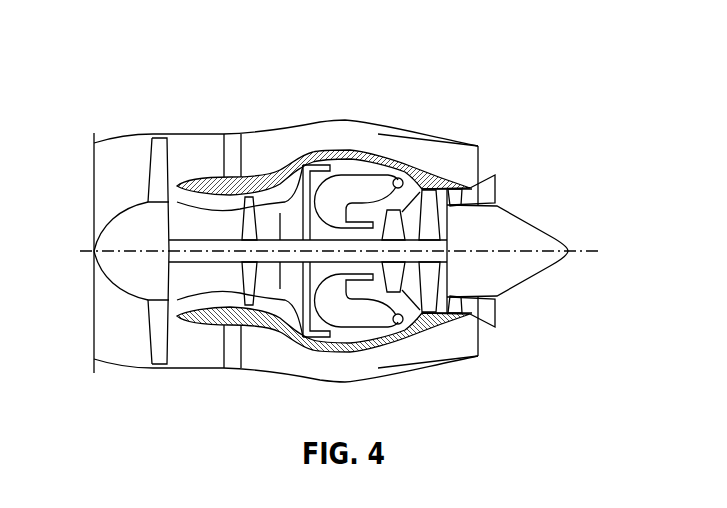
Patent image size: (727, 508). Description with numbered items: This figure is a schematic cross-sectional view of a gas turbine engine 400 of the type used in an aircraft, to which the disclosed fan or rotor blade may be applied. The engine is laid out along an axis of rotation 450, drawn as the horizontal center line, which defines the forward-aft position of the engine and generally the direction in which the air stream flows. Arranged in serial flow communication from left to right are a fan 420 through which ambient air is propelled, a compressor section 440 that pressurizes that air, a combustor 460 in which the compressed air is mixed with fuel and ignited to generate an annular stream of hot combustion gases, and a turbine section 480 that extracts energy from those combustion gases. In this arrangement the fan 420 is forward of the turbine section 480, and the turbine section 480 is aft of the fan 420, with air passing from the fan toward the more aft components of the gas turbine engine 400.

The gas turbine engine 400 is at (92, 52).
The fan 420 is at (150, 333).
The compressor section 440 is at (270, 203).
The axis of rotation 450 is at (590, 251).
The combustor 460 is at (365, 183).
The turbine section 480 is at (413, 305).